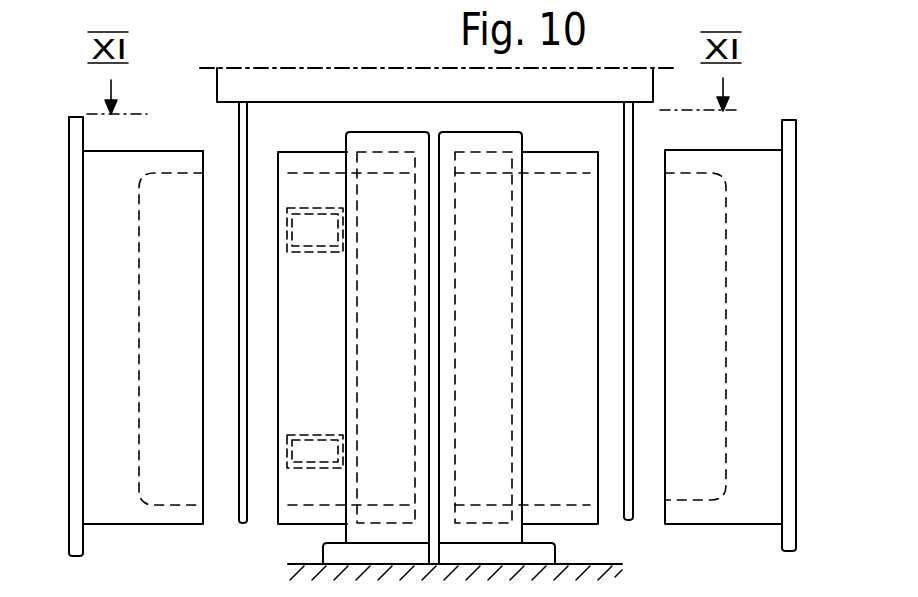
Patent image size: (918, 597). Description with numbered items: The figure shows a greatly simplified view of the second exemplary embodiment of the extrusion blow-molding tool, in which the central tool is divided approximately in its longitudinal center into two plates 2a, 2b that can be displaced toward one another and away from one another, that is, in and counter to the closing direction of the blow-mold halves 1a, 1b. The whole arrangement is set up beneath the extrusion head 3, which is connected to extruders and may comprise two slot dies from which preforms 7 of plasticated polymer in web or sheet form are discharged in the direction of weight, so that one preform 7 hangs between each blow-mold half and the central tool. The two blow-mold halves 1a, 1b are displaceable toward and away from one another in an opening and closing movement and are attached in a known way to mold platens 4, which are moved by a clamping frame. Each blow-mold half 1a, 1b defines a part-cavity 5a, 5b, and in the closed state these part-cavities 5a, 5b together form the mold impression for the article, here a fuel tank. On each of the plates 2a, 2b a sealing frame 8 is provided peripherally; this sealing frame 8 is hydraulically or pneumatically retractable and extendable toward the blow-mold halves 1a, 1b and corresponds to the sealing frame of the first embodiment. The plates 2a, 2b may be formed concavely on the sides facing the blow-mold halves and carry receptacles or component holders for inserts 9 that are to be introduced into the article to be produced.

The blow-mold half 1a is at (130, 173).
The blow-mold half 1b is at (730, 157).
The plate of the central tool 2a is at (400, 358).
The plate of the central tool 2b is at (495, 358).
The extrusion head 3 is at (362, 78).
The mold platen 4 is at (73, 340).
The part-cavity 5a is at (183, 368).
The part-cavity 5b is at (708, 368).
The preform 7 is at (238, 343).
The sealing frame 8 is at (315, 358).
The insert 9 is at (290, 238).